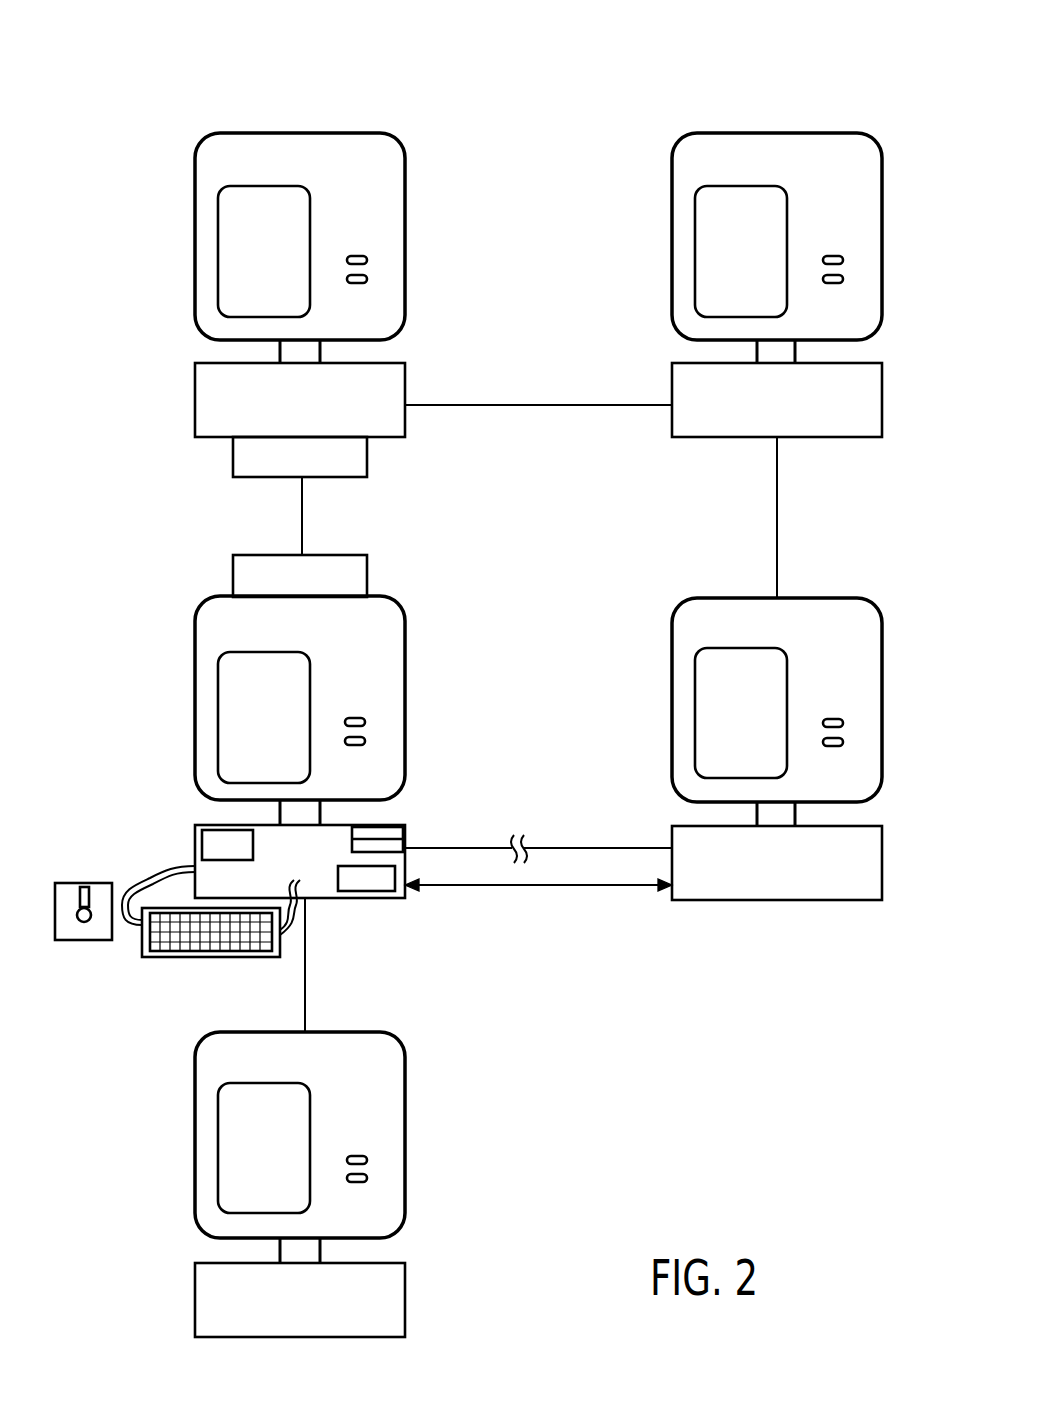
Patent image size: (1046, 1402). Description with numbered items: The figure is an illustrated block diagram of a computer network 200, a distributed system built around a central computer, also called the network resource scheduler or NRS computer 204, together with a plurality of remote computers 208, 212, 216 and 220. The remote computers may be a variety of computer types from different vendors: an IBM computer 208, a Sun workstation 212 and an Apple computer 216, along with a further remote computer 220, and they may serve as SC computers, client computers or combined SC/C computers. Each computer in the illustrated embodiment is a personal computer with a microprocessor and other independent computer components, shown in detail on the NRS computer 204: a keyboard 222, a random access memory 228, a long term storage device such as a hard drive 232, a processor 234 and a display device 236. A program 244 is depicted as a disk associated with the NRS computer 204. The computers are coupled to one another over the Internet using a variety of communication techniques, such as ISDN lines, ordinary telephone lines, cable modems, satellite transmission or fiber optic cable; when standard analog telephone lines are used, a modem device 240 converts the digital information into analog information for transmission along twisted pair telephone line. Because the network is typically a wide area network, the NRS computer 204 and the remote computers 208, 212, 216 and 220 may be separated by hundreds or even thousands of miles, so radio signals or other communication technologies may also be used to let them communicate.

The computer network 200 is at (158, 30).
The central computer or network resource scheduler (NRS) computer 204 is at (397, 601).
The IBM computer 208 is at (400, 142).
The Sun workstation 212 is at (877, 142).
The Apple computer 216 is at (877, 603).
The remote computer 220 is at (407, 1062).
The keyboard 222 is at (155, 962).
The random access memory 228 is at (200, 838).
The long term storage device (hard drive) 232 is at (390, 832).
The processor 234 is at (372, 883).
The display device 236 is at (217, 703).
The modem device 240 is at (232, 573).
The program (disk) 244 is at (75, 883).